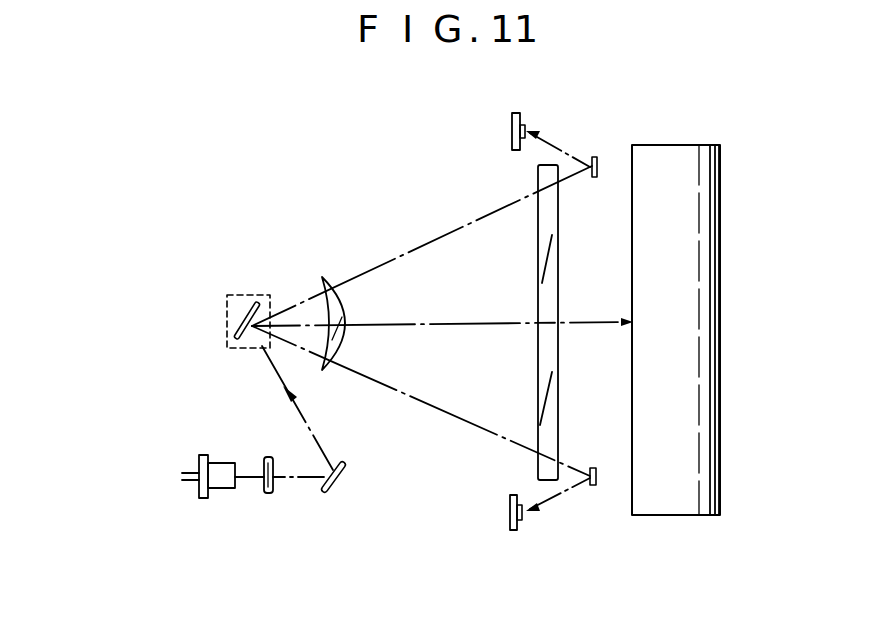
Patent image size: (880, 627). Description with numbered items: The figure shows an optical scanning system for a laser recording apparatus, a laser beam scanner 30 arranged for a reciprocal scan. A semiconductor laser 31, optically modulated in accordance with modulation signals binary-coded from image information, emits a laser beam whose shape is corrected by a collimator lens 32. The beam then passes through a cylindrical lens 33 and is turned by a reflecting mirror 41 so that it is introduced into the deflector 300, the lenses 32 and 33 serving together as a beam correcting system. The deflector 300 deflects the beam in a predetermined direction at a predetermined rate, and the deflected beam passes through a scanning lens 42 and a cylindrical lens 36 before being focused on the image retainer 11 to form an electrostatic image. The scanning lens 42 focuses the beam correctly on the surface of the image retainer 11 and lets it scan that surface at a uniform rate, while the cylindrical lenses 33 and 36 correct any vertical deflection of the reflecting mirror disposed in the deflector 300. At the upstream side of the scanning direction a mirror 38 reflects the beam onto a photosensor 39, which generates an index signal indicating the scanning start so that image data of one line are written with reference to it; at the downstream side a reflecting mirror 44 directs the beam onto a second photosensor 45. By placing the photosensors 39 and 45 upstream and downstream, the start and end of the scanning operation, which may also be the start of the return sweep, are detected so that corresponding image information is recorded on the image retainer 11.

The image retainer 11 is at (690, 145).
The laser beam scanner 30 is at (372, 203).
The deflector 300 is at (242, 293).
The semiconductor laser 31 is at (194, 458).
The collimator lens 32 is at (228, 462).
The cylindrical lens 33 is at (268, 494).
The cylindrical lens 36 is at (538, 258).
The mirror 38 is at (591, 158).
The photosensor 39 is at (523, 123).
The reflecting mirror 41 is at (335, 485).
The scanning lens 42 is at (327, 276).
The reflecting mirror 44 is at (593, 486).
The photosensor 45 is at (522, 521).